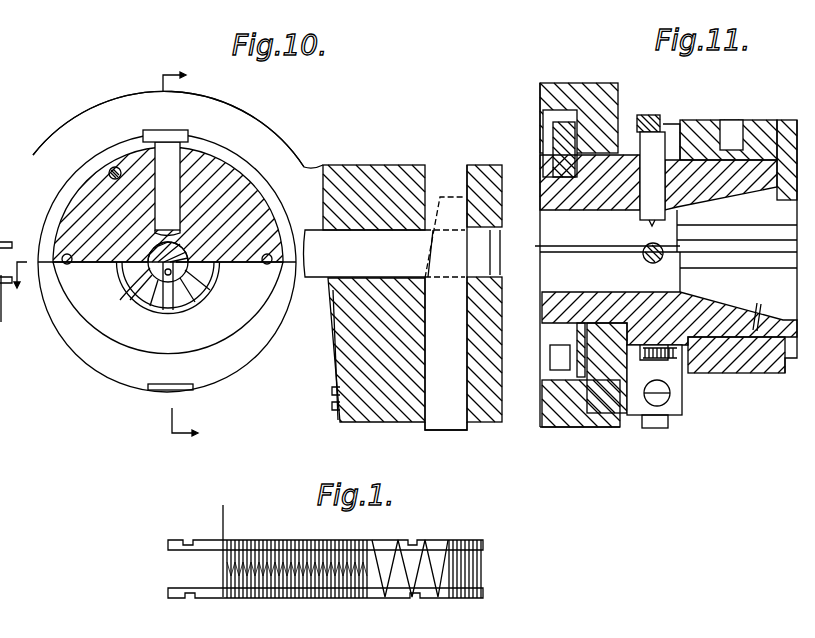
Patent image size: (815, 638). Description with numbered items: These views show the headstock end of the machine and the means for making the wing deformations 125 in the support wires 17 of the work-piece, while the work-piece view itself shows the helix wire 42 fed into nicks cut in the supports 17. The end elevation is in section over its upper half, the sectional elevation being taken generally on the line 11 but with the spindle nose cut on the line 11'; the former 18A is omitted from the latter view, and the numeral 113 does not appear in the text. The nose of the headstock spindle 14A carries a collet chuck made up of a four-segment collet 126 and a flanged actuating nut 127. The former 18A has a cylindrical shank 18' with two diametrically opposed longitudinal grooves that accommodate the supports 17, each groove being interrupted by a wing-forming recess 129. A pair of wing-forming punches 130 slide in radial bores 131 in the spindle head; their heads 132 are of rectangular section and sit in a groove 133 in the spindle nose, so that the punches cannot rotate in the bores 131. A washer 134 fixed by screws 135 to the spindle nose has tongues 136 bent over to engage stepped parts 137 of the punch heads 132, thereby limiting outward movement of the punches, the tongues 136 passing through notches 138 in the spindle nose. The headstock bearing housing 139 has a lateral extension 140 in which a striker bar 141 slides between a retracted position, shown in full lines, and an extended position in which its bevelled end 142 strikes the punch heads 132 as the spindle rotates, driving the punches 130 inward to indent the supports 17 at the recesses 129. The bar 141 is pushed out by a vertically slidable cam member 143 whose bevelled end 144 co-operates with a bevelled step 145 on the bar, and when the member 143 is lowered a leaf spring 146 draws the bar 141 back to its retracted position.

In FIG. 10, the frame plate 113 is at (161, 176).
In FIG. 10, the lay-shaft 11 is at (190, 254).
In FIG. 10, the section line 11— 11' is at (16, 282).
In FIG. 10, the headstock spindle 14A is at (73, 200).
In FIG. 11, the headstock spindle 14A is at (543, 203).
In FIG. 10, the support wire 17 is at (176, 304).
In FIG. 1, the support wire 17 is at (190, 588).
In FIG. 10, the former 18A is at (147, 295).
In FIG. 10, the cylindrical shank 18' is at (214, 284).
In FIG. 1, the helix wire 42 is at (223, 512).
In FIG. 1, the wing deformations 125 is at (200, 527).
In FIG. 10, the four-segment collet 126 is at (150, 306).
In FIG. 11, the four-segment collet 126 is at (690, 243).
In FIG. 10, the flanged actuating nut 127 is at (256, 352).
In FIG. 11, the flanged actuating nut 127 is at (780, 118).
In FIG. 10, the wing-forming recess 129 is at (143, 266).
In FIG. 10, the wing-forming punches 130 is at (182, 163).
In FIG. 11, the wing-forming punches 130 is at (645, 216).
In FIG. 10, the radial bores 131 is at (136, 149).
In FIG. 11, the radial bores 131 is at (600, 208).
In FIG. 10, the punch heads 132 is at (166, 141).
In FIG. 11, the punch heads 132 is at (642, 115).
In FIG. 10, the groove 133 is at (250, 170).
In FIG. 11, the groove 133 is at (682, 400).
In FIG. 11, the washer 134 is at (728, 375).
In FIG. 11, the screws 135 is at (685, 360).
In FIG. 11, the tongues 136 is at (690, 122).
In FIG. 10, the stepped parts 137 is at (187, 136).
In FIG. 11, the notches 138 is at (672, 122).
In FIG. 10, the headstock bearing housing 139 is at (285, 141).
In FIG. 11, the headstock bearing housing 139 is at (614, 76).
In FIG. 10, the lateral extension 140 is at (390, 177).
In FIG. 10, the striker bar 141 is at (326, 228).
In FIG. 10, the bevelled end 142 is at (312, 240).
In FIG. 10, the cam member 143 is at (457, 426).
In FIG. 11, the cam member 143 is at (667, 433).
In FIG. 10, the bevelled end 144 is at (431, 293).
In FIG. 10, the bevelled step 145 is at (430, 256).
In FIG. 10, the leaf spring 146 is at (333, 326).
In FIG. 11, the leaf spring 146 is at (638, 407).